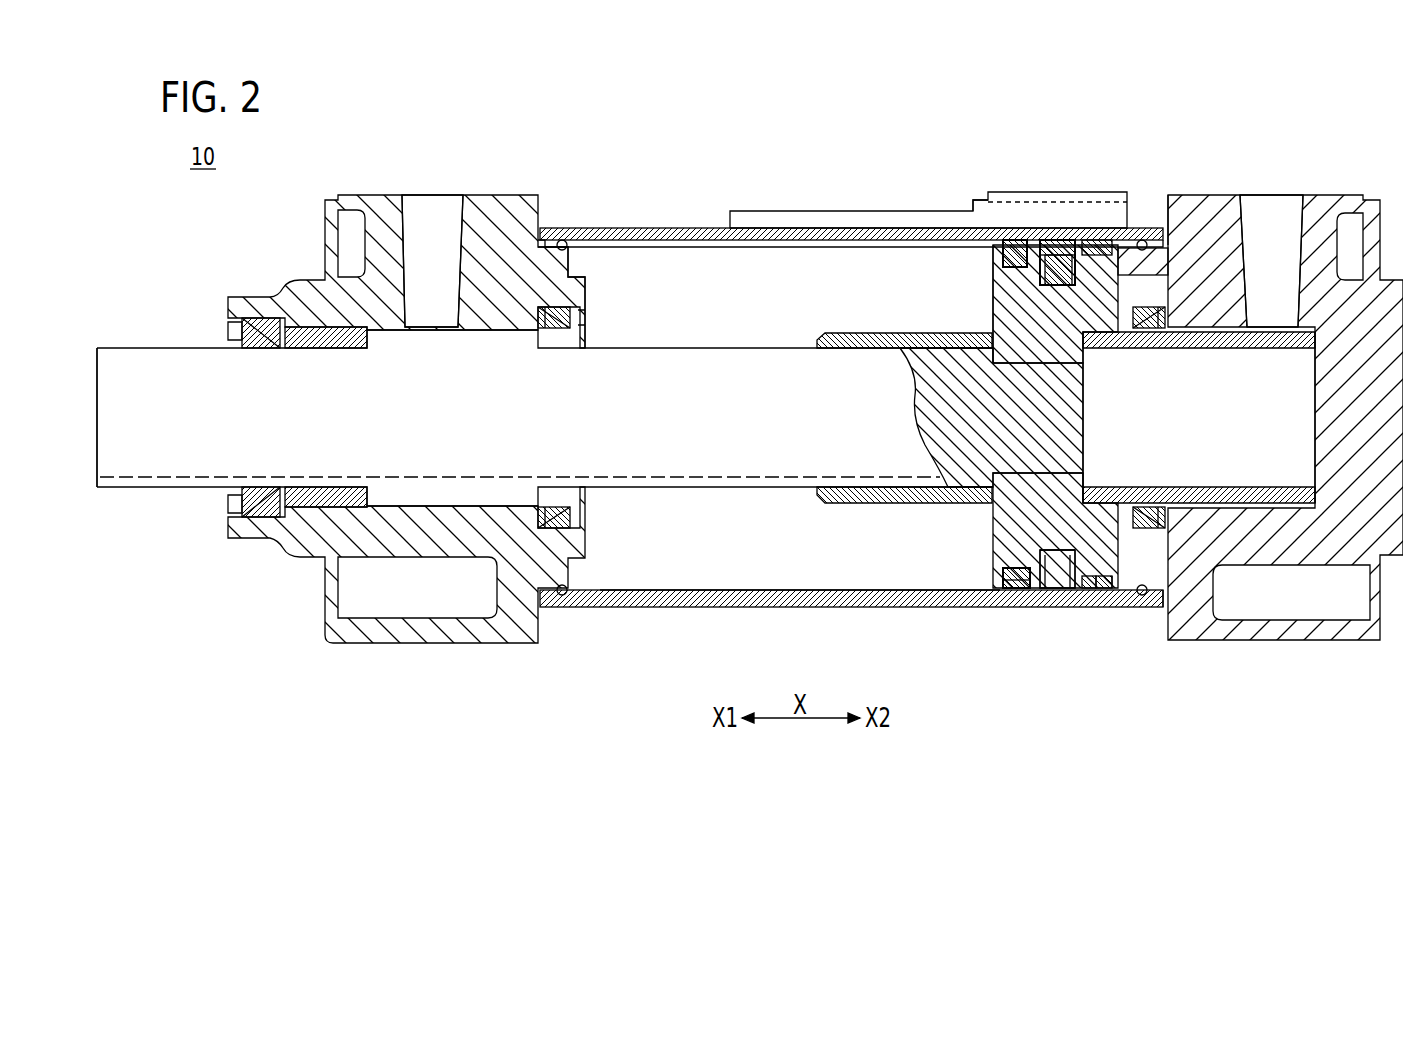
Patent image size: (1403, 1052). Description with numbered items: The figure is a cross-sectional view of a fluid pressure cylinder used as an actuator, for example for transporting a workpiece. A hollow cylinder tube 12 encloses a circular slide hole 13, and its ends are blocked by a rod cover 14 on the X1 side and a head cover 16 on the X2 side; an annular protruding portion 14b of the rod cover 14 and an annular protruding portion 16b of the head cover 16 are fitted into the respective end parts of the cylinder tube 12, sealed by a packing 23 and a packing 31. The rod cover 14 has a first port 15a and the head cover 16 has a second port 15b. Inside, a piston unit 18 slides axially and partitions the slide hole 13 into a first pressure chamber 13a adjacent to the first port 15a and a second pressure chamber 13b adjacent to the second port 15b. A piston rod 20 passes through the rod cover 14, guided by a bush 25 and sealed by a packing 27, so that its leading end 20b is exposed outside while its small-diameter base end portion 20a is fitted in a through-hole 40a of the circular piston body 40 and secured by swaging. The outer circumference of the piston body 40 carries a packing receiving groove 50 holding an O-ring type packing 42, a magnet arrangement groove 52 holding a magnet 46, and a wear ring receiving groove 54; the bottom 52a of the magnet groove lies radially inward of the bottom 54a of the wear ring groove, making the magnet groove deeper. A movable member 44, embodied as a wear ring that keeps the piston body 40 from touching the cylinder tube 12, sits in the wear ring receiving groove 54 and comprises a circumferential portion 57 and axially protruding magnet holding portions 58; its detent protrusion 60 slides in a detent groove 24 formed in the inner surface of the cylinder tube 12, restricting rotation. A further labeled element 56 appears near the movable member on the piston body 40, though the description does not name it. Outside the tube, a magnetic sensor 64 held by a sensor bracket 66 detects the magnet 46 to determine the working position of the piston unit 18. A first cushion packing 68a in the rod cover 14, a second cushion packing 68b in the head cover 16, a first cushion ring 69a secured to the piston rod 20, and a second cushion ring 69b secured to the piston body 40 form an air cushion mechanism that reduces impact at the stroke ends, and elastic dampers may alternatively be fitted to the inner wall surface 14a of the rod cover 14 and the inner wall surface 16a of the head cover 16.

The cylinder tube 12 is at (638, 226).
The slide hole 13 is at (728, 558).
The first pressure chamber 13a is at (865, 568).
The second pressure chamber 13b is at (1125, 590).
The rod cover 14 is at (378, 190).
The inner wall surface 14a is at (578, 546).
The annular protruding portion 14b is at (560, 296).
The first port 15a is at (424, 208).
The second port 15b is at (1290, 205).
The head cover 16 is at (1355, 190).
The inner wall surface 16a is at (1097, 475).
The annular protruding portion 16b is at (1166, 240).
The piston unit 18 is at (985, 298).
The piston rod 20 is at (652, 490).
The base end portion 20a is at (1097, 385).
The leading end 20b is at (113, 357).
The packing 23 is at (564, 240).
The detent groove 24 is at (686, 248).
The bush 25 is at (330, 495).
The packing 27 is at (258, 498).
The packing 31 is at (1143, 240).
The piston body 40 is at (987, 416).
The through-hole 40a is at (1027, 470).
The packing 42 is at (1020, 590).
The movable member 44 is at (1110, 226).
The magnet 46 is at (1070, 230).
The packing receiving groove 50 is at (1012, 590).
The magnet arrangement groove 52 is at (1052, 590).
The bottom 52a is at (1005, 575).
The wear ring receiving groove 54 is at (1095, 590).
The bottom 54a is at (1105, 590).
The magnet 56 is at (1012, 230).
The circumferential portion 57 is at (1087, 590).
The magnet holding portion 58 is at (1030, 262).
The detent protrusion 60 is at (1045, 230).
The magnetic sensor 64 is at (981, 208).
The sensor bracket 66 is at (1100, 228).
The first cushion packing 68a is at (551, 512).
The second cushion packing 68b is at (1138, 500).
The first cushion ring 69a is at (872, 333).
The second cushion ring 69b is at (1240, 490).